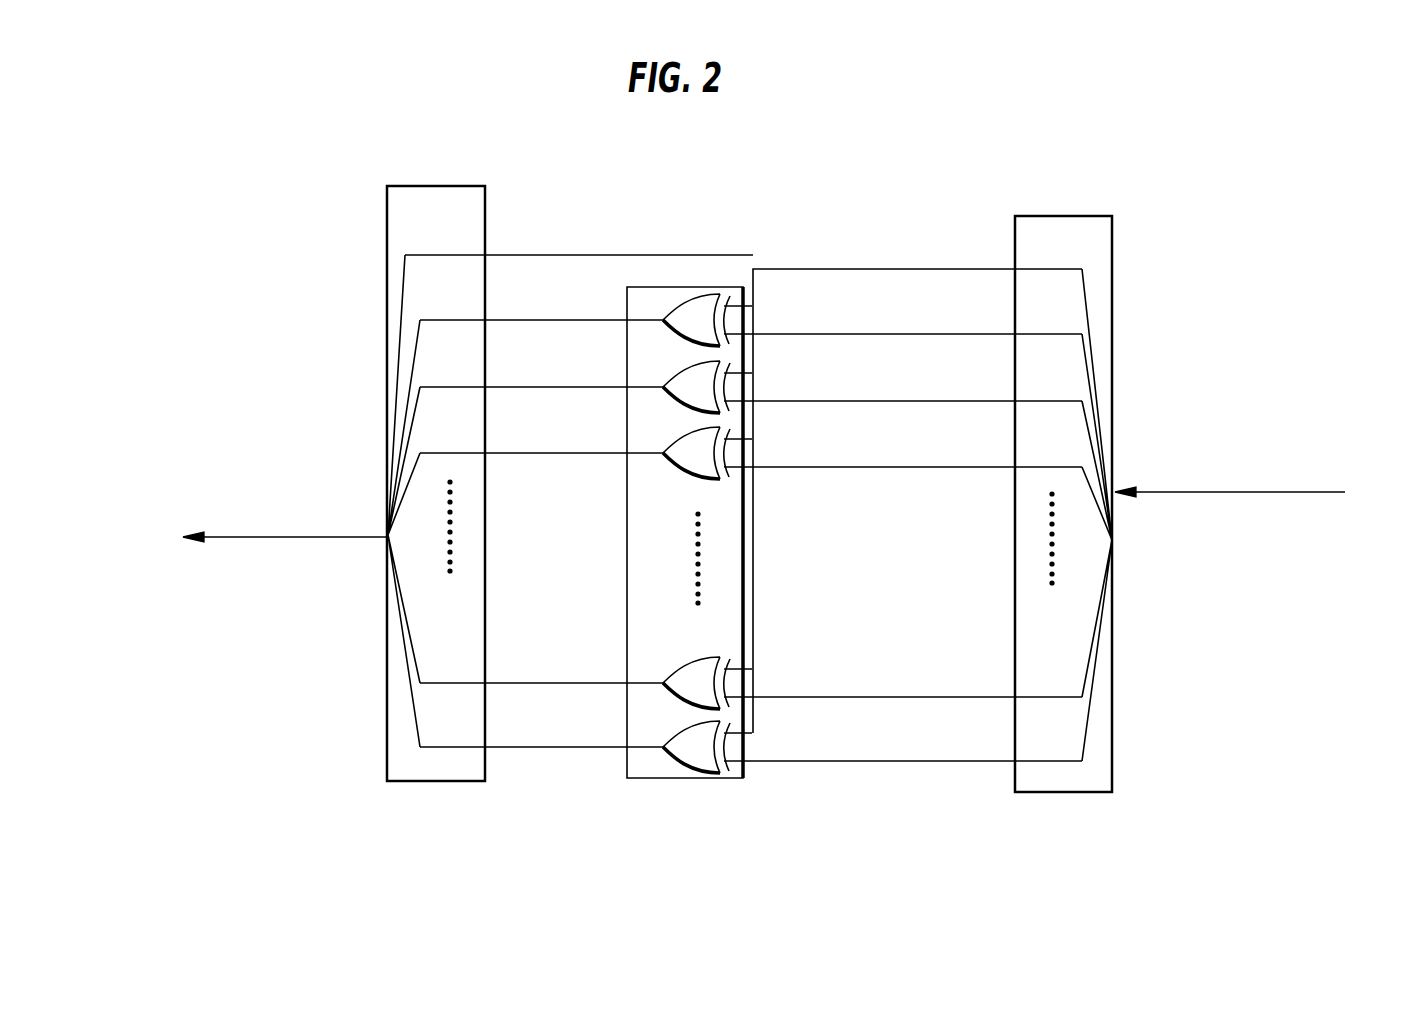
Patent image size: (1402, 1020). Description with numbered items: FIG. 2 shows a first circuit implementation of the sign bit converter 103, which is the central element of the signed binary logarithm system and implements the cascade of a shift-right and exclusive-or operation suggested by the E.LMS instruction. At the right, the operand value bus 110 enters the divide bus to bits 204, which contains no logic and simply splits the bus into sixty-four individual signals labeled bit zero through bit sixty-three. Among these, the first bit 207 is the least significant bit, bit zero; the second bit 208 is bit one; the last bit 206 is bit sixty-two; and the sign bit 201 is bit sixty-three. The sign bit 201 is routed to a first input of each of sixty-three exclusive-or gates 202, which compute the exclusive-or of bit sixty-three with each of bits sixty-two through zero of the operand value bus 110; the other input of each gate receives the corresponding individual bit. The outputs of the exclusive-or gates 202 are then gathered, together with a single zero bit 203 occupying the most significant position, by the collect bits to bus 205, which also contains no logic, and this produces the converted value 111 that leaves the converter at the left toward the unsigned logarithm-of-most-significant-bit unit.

The sign bit converter 103 is at (828, 178).
The operand value bus 110 is at (1251, 469).
The converted value bus 111 is at (237, 515).
The sign bit 201 is at (917, 485).
The exclusive-or gates 202 is at (601, 554).
The zero bit 203 is at (593, 241).
The divide bus to bits 204 is at (1072, 533).
The collect bits to bus 205 is at (406, 504).
The last bit 206 is at (917, 319).
The first bit 207 is at (917, 742).
The second bit 208 is at (917, 677).